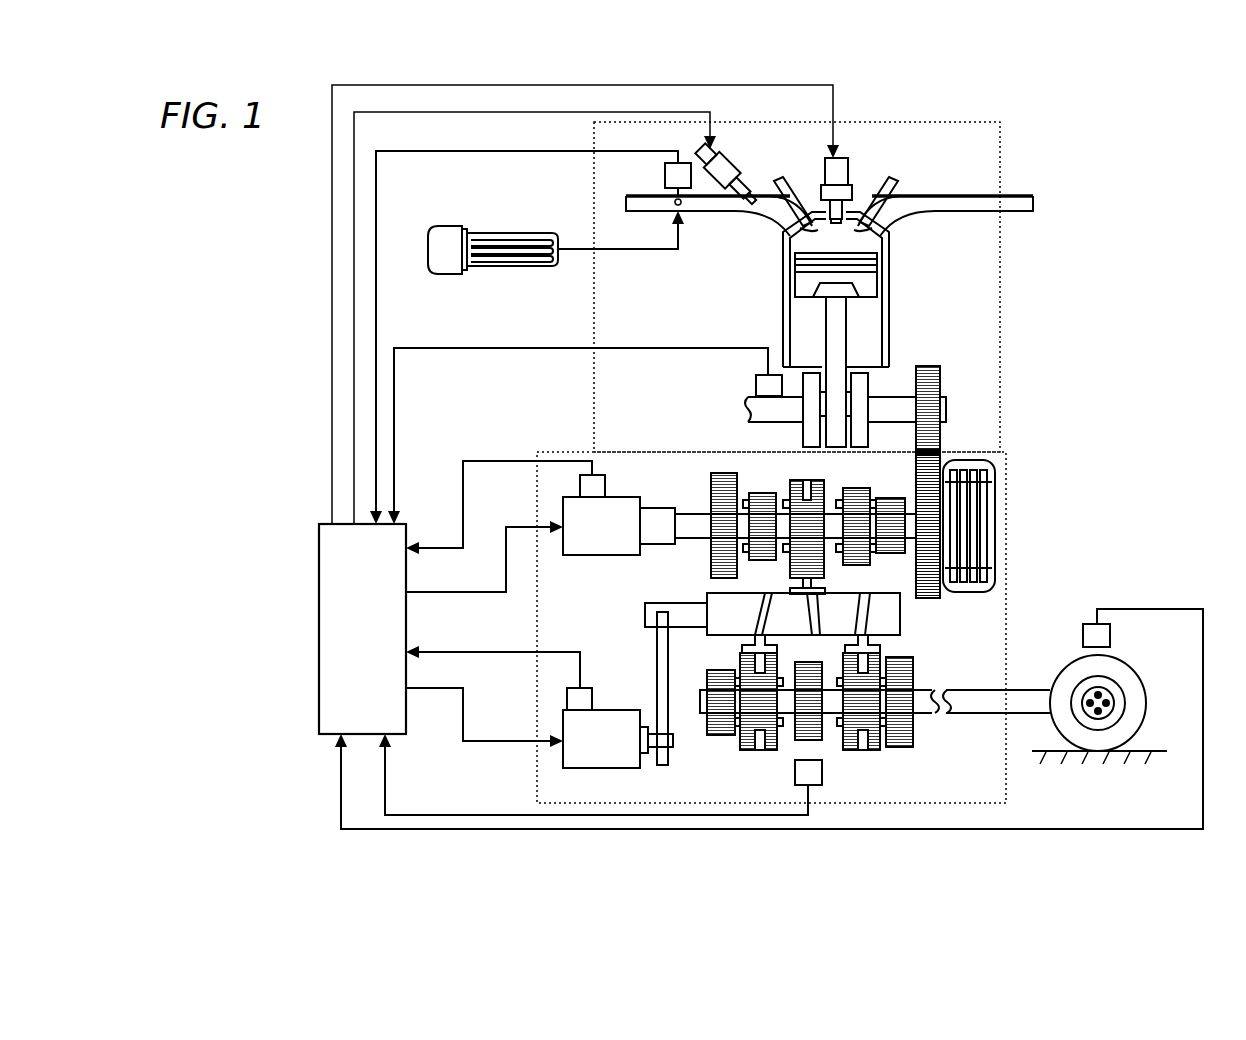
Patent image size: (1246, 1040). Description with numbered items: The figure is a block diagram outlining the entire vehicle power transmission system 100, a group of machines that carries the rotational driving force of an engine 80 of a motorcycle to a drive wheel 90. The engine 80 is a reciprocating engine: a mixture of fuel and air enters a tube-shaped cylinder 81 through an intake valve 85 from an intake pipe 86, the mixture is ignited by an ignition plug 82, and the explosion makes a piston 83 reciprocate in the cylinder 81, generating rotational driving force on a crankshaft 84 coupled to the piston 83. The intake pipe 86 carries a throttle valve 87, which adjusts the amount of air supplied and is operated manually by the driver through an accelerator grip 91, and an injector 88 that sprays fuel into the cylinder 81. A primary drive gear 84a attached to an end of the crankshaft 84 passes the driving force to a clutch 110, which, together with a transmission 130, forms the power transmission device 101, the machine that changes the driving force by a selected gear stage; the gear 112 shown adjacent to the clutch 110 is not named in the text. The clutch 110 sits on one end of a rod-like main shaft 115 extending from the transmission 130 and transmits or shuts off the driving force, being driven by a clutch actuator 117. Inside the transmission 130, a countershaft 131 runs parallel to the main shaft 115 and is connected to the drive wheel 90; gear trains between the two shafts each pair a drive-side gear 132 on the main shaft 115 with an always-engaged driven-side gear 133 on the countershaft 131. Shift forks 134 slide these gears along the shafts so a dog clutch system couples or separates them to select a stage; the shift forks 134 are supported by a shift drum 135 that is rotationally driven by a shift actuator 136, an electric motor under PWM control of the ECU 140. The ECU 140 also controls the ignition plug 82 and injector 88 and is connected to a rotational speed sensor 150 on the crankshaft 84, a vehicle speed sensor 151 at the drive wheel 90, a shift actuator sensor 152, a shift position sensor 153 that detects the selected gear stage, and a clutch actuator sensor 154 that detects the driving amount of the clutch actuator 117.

The vehicle power transmission system 100 is at (296, 424).
The engine 80 is at (1003, 120).
The cylinder 81 is at (783, 302).
The ignition plug 82 is at (848, 159).
The piston 83 is at (877, 251).
The crankshaft 84 is at (748, 422).
The primary drive gear 84a is at (926, 366).
The intake valve 85 is at (789, 179).
The intake pipe 86 is at (742, 216).
The throttle valve 87 is at (682, 209).
The injector 88 is at (724, 156).
The drive wheel 90 is at (1132, 664).
The accelerator grip 91 is at (515, 233).
The power transmission device 101 is at (1009, 450).
The clutch 110 is at (968, 592).
The primary gear 112 is at (916, 468).
The main shaft 115 is at (683, 511).
The clutch actuator 117 is at (581, 556).
The transmission 130 is at (932, 756).
The countershaft 131 is at (931, 690).
The drive-side gear 132 is at (711, 573).
The driven-side gear 133 is at (741, 758).
The shift fork 134 is at (742, 649).
The shift drum 135 is at (848, 594).
The shift actuator 136 is at (628, 708).
The ECU 140 is at (319, 624).
The rotational speed sensor 150 is at (757, 376).
The vehicle speed sensor 151 is at (1085, 624).
The shift actuator sensor 152 is at (581, 674).
The shift position sensor 153 is at (822, 772).
The clutch actuator sensor 154 is at (665, 178).